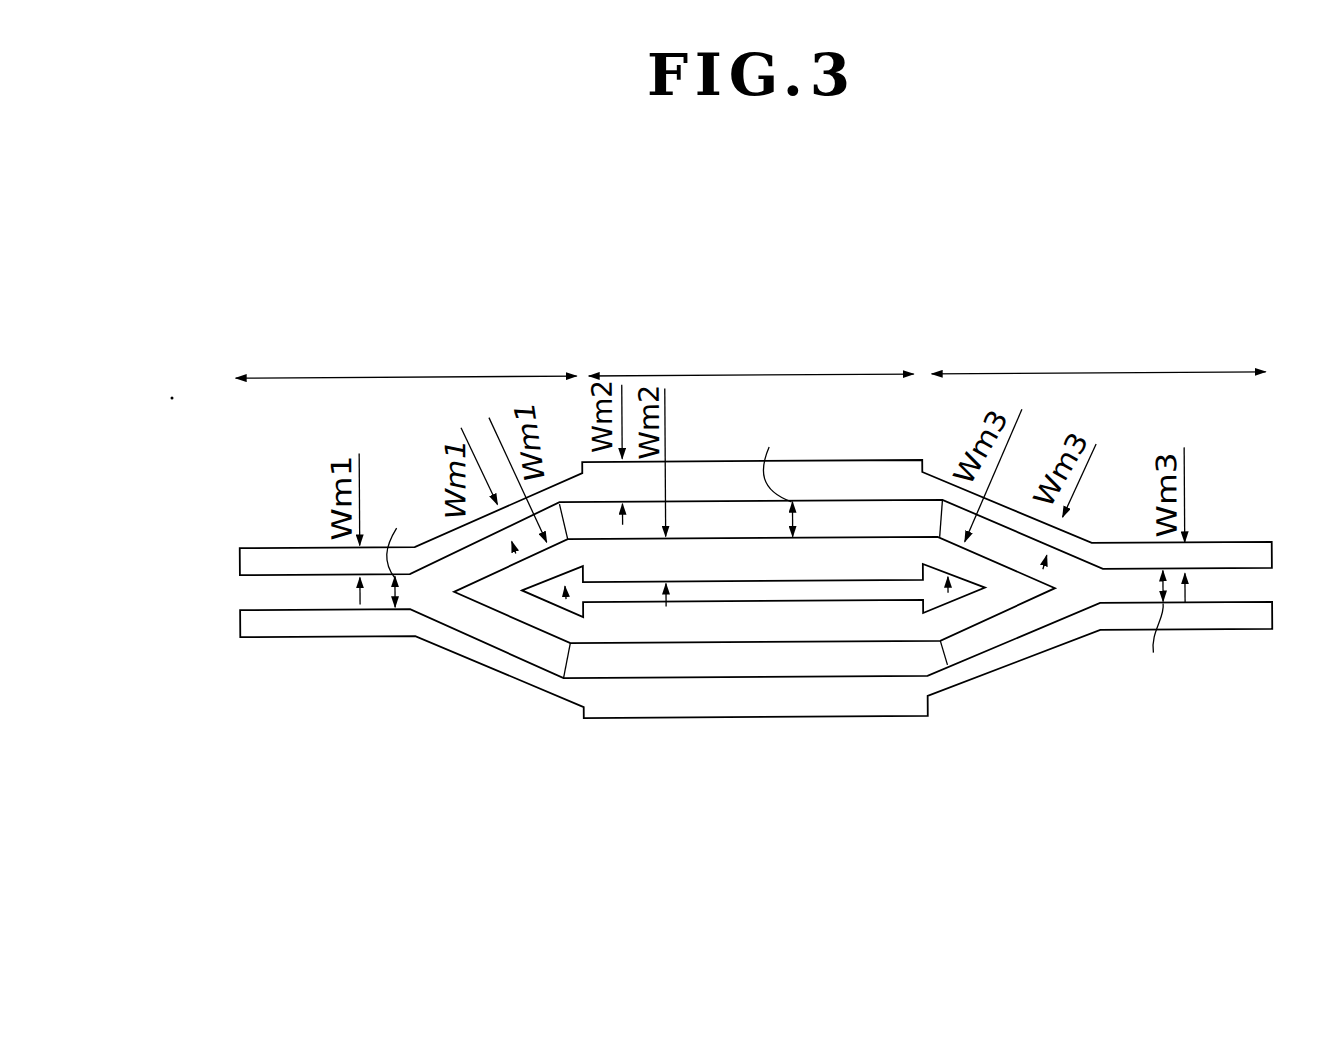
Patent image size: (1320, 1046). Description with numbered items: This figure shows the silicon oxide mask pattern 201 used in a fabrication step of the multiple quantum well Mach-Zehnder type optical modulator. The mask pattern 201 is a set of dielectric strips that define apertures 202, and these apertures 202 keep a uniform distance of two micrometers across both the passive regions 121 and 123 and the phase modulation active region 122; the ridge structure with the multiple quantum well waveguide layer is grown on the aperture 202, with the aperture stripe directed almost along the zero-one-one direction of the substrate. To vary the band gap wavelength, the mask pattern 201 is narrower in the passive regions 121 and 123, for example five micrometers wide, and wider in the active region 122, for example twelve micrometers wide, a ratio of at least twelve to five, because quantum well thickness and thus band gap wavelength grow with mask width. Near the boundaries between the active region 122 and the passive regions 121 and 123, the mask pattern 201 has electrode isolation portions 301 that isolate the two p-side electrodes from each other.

The silicon oxide mask pattern 201 is at (428, 634).
The aperture 202 is at (277, 589).
The electrode isolation portion 301 is at (571, 653).
The passive region 121 is at (466, 341).
The phase modulation active region 122 is at (775, 341).
The passive region 123 is at (1075, 336).